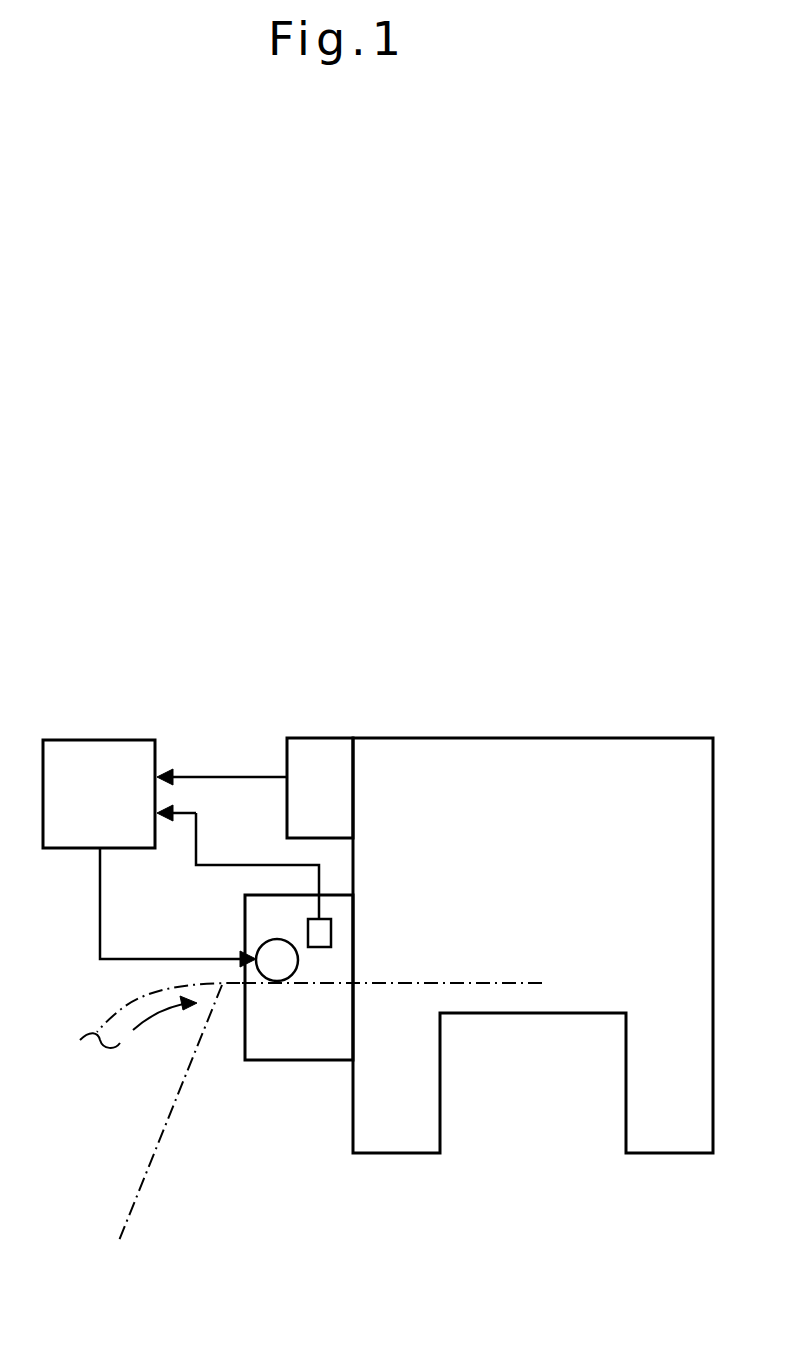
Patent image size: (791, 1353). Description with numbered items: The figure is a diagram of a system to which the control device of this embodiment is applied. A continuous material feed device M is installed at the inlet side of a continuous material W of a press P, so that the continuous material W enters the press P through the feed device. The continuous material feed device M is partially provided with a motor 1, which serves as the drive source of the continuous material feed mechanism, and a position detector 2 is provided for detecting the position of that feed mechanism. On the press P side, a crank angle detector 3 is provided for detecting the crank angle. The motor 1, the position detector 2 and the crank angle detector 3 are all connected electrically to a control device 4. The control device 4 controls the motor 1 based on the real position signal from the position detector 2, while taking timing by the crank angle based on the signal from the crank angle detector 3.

The motor 1 is at (260, 948).
The position detector 2 is at (308, 924).
The crank angle detector 3 is at (319, 738).
The control device 4 is at (100, 740).
The press P is at (567, 738).
The continuous material feed device M is at (296, 1062).
The continuous material W is at (311, 1138).